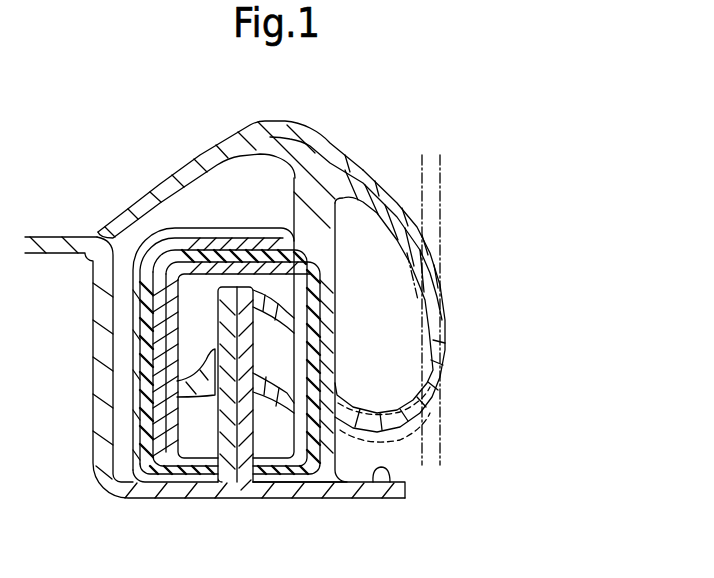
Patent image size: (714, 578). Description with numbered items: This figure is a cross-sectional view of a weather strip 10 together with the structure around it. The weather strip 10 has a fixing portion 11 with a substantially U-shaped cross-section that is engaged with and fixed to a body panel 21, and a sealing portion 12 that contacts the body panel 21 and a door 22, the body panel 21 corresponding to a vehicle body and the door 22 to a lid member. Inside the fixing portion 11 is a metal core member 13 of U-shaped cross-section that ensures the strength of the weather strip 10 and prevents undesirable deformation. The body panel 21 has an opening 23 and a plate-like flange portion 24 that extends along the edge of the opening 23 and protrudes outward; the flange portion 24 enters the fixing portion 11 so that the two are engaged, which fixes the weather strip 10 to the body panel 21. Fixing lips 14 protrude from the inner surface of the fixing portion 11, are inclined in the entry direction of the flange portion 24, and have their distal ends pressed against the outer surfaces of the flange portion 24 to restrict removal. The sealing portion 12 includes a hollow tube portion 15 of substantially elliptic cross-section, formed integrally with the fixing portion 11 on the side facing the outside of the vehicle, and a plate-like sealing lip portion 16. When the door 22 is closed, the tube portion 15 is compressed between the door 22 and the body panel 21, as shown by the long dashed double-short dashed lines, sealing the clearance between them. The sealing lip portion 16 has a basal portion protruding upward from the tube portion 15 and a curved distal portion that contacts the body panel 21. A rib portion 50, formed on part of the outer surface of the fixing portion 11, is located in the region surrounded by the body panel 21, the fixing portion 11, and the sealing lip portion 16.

The weather strip 10 is at (402, 135).
The fixing portion 11 is at (201, 330).
The sealing portion 12 is at (322, 281).
The core member 13 is at (153, 440).
The fixing lips 14 is at (192, 412).
The tube portion 15 is at (445, 325).
The sealing lip portion 16 is at (170, 165).
The body panel 21 is at (95, 363).
The door 22 is at (441, 182).
The opening 23 is at (387, 497).
The flange portion 24 is at (258, 482).
The rib portion 50 is at (130, 312).